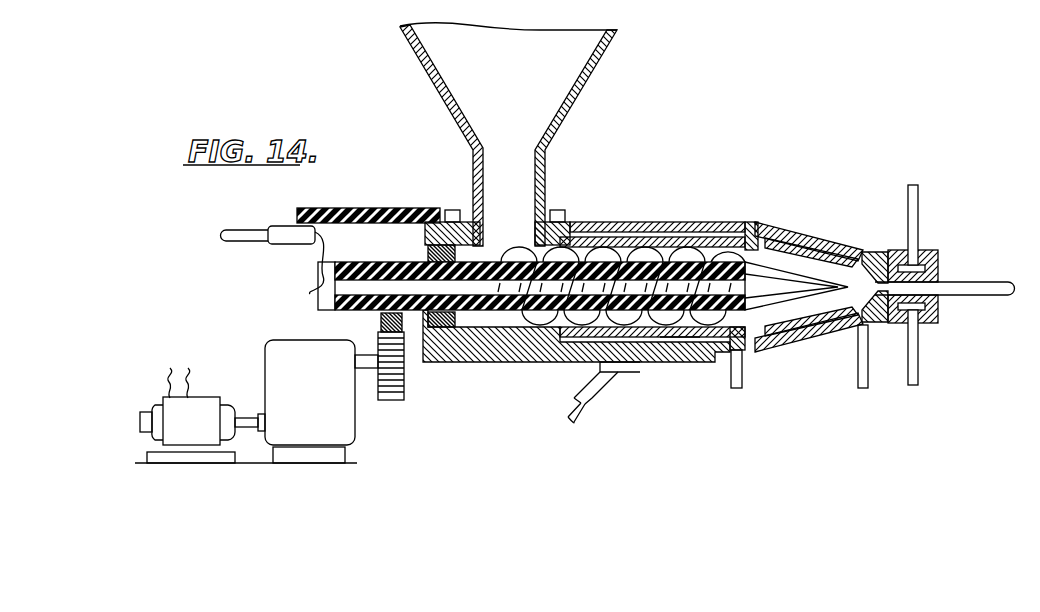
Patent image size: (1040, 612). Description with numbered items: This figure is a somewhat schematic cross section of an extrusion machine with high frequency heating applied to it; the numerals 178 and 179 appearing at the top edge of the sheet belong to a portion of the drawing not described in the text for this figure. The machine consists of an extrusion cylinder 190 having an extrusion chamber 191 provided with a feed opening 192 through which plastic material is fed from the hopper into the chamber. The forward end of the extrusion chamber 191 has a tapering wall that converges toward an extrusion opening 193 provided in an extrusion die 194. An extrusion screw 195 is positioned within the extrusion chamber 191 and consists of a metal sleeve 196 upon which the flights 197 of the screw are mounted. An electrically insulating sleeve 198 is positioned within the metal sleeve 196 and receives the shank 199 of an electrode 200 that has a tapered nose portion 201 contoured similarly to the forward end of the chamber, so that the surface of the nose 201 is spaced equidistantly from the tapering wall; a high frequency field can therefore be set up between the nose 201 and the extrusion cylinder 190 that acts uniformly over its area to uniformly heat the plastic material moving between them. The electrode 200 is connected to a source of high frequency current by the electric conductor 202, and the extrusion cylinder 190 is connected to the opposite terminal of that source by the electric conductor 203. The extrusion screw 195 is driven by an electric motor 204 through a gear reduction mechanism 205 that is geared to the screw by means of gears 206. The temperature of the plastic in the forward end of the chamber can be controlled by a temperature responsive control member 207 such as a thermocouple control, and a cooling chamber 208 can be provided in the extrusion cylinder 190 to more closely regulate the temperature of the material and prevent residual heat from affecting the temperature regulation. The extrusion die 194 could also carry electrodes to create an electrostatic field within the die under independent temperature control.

The conveyor 178 is at (324, 9).
The feed chute 179 is at (640, 18).
The extrusion cylinder 190 is at (846, 251).
The extrusion chamber 191 is at (636, 252).
The feed opening 192 is at (590, 233).
The extrusion opening 193 is at (898, 288).
The extrusion die 194 is at (935, 323).
The extrusion screw 195 is at (692, 337).
The metal sleeve 196 is at (670, 335).
The flights 197 is at (562, 335).
The electrically insulating sleeve 198 is at (536, 330).
The shank 199 is at (488, 265).
The electrode 200 is at (800, 302).
The tapered nose portion 201 is at (820, 297).
The electric conductor 202 is at (256, 242).
The electric conductor 203 is at (587, 414).
The electric motor 204 is at (203, 436).
The gear reduction mechanism 205 is at (320, 396).
The gears 206 is at (378, 336).
The temperature responsive control member 207 is at (795, 338).
The cooling chamber 208 is at (786, 238).